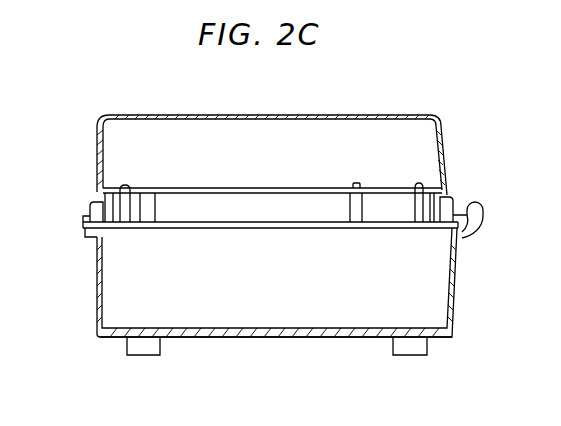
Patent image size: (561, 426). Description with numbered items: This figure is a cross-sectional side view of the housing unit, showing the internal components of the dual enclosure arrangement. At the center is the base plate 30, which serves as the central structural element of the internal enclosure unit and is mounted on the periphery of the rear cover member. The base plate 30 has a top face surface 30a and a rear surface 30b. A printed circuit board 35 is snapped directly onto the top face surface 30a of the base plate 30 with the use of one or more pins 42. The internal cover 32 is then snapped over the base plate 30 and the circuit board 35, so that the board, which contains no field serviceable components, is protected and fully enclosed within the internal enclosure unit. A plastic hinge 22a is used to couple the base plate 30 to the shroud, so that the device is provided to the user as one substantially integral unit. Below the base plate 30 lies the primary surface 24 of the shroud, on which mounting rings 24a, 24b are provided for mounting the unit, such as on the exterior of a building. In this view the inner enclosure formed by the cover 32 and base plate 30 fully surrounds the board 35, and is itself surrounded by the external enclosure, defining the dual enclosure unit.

The internal cover 32 is at (181, 132).
The base plate 30 is at (82, 221).
The top face surface 30a is at (188, 218).
The rear surface 30b is at (215, 228).
The printed circuit board 35 is at (278, 190).
The pin 42 is at (355, 209).
The hinge 22a is at (486, 207).
The primary surface 24 is at (263, 337).
The mounting ring 24a is at (142, 356).
The mounting ring 24b is at (402, 356).